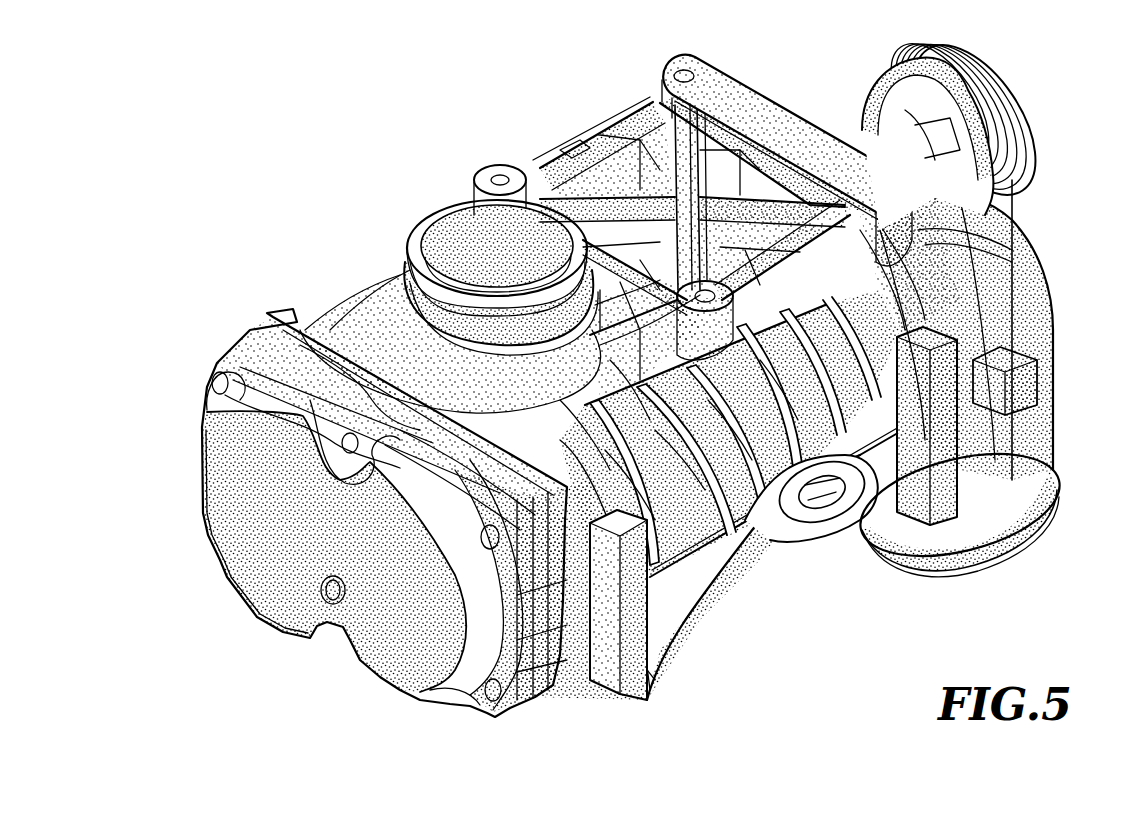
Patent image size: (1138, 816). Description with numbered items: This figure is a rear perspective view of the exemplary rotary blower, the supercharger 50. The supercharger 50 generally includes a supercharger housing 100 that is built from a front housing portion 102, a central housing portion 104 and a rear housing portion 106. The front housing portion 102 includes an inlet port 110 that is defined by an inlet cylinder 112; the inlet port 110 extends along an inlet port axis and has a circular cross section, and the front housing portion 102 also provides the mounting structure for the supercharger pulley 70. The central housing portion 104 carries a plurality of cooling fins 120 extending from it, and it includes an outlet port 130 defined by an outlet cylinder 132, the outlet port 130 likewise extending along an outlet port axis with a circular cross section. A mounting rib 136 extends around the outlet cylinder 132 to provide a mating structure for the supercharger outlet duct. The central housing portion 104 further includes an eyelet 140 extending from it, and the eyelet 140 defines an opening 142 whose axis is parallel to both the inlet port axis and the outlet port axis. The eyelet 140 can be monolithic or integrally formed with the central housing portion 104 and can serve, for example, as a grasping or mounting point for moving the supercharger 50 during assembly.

The supercharger 50 is at (316, 106).
The supercharger pulley 70 is at (1012, 130).
The supercharger housing 100 is at (722, 557).
The front housing portion 102 is at (813, 95).
The central housing portion 104 is at (763, 535).
The rear housing portion 106 is at (548, 690).
The inlet port 110 is at (1002, 548).
The inlet cylinder 112 is at (1040, 483).
The cooling fins 120 is at (672, 612).
The outlet port 130 is at (447, 235).
The outlet cylinder 132 is at (430, 315).
The mounting rib 136 is at (408, 262).
The eyelet 140 is at (840, 513).
The opening 142 is at (850, 470).